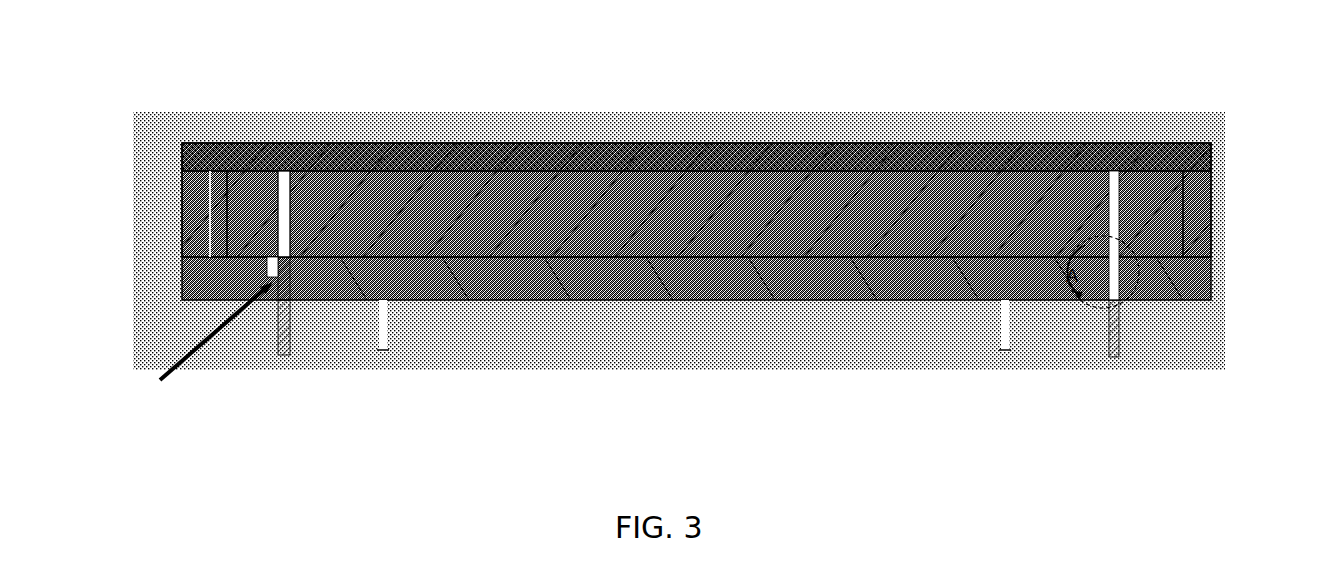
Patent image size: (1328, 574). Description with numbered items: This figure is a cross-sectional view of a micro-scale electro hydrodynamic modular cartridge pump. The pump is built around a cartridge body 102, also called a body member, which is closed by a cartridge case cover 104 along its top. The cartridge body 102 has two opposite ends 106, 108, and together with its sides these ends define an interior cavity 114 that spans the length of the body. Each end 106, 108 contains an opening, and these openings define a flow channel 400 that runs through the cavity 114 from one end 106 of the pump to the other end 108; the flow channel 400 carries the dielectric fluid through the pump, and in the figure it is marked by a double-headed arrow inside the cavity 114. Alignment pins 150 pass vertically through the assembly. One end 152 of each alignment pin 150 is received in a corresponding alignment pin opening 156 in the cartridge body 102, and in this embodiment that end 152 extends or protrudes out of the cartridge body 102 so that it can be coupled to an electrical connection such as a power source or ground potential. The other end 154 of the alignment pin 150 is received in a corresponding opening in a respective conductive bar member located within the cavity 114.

The cartridge body 102 is at (482, 287).
The cartridge case cover 104 is at (215, 141).
The end 106 is at (182, 213).
The end 108 is at (1207, 207).
The cavity 114 is at (422, 203).
The alignment pin 150 is at (278, 223).
The end of alignment pin 152 is at (272, 350).
The other end of alignment pin 154 is at (285, 169).
The alignment pin opening 156 is at (253, 272).
The flow channel 400 is at (708, 217).